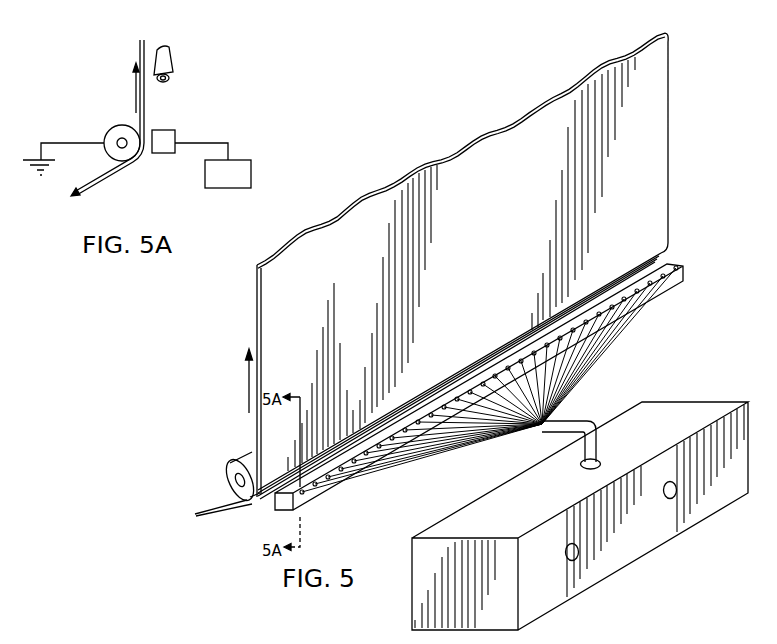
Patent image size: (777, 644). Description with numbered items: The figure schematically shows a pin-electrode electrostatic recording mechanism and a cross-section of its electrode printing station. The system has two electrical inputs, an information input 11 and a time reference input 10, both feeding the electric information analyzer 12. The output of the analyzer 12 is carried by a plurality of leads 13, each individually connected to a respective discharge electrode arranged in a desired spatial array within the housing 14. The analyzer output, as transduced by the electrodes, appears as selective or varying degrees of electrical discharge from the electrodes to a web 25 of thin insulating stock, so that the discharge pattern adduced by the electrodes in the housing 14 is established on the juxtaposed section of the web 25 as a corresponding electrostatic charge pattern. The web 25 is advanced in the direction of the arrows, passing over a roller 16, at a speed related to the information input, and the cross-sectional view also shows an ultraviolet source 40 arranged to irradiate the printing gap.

In FIG. 5, the time reference input 10 is at (573, 543).
In FIG. 5, the information input 11 is at (670, 481).
In FIG. 5, the electric information analyzer 12 is at (541, 611).
In FIG. 5A, the electric information analyzer 12 is at (218, 188).
In FIG. 5, the leads 13 is at (430, 457).
In FIG. 5A, the leads 13 is at (200, 143).
In FIG. 5, the housing 14 is at (686, 273).
In FIG. 5A, the housing 14 is at (162, 153).
In FIG. 5, the grounded roller 16 is at (229, 472).
In FIG. 5A, the grounded roller 16 is at (111, 130).
In FIG. 5, the web 25 is at (211, 505).
In FIG. 5A, the web 25 is at (97, 184).
In FIG. 5A, the ultraviolet source 40 is at (183, 66).